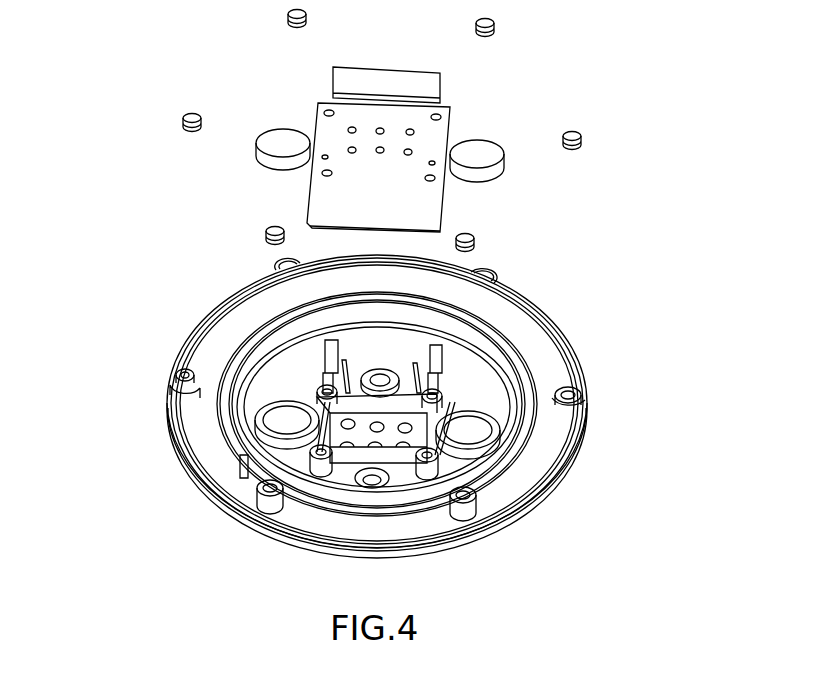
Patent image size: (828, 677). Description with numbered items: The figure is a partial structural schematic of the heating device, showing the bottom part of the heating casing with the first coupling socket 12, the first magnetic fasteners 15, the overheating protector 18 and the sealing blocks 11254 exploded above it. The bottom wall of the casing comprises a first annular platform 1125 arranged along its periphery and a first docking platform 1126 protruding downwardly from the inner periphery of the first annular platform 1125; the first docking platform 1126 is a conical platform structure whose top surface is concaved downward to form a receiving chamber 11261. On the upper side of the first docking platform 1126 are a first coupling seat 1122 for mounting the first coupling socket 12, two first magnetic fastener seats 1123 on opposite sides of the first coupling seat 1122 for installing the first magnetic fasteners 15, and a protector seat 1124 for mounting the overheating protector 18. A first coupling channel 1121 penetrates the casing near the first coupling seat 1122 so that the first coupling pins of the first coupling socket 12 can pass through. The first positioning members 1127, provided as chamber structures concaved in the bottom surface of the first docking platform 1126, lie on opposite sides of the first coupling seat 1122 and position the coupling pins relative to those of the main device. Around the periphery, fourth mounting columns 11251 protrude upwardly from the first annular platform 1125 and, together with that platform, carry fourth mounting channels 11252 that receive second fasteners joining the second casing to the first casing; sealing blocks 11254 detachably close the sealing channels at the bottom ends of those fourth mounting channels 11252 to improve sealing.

The sealing block 11254 is at (496, 24).
The first magnetic fastener 15 is at (293, 133).
The overheating protector 18 is at (440, 78).
The first coupling socket 12 is at (450, 117).
The first docking platform 1126 is at (187, 327).
The first annular platform 1125 is at (172, 433).
The protector seat 1124 is at (530, 310).
The first coupling seat 1122 is at (537, 342).
The first coupling channel 1121 is at (320, 383).
The fourth mounting channel 11252 is at (183, 370).
The fourth mounting column 11251 is at (172, 383).
The first magnetic fastener seat 1123 is at (583, 385).
The receiving chamber 11261 is at (260, 480).
The first positioning member 1127 is at (380, 370).